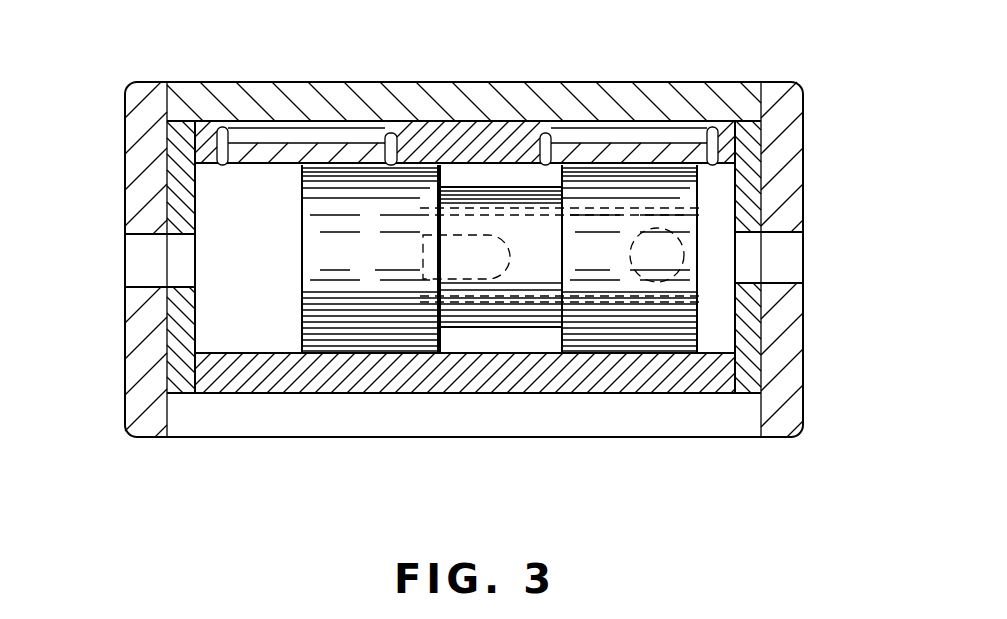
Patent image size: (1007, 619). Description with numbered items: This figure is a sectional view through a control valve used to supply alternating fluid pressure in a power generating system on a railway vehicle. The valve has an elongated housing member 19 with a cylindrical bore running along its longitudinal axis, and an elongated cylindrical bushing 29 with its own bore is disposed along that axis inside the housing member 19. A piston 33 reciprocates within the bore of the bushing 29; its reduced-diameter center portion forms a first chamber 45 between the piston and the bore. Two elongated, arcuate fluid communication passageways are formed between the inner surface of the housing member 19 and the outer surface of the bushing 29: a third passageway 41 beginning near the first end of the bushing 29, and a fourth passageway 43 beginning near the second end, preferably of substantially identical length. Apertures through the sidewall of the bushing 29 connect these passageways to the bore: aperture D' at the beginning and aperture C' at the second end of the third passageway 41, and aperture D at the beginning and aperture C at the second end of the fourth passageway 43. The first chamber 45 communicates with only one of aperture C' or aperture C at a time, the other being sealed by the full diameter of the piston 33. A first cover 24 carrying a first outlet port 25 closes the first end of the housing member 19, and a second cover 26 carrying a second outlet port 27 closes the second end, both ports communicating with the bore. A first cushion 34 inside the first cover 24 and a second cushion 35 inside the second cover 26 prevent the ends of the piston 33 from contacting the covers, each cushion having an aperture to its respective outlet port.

The housing member 19 is at (190, 92).
The first cover 24 is at (793, 165).
The first outlet port 25 is at (785, 260).
The second cover 26 is at (135, 167).
The second outlet port 27 is at (135, 261).
The bushing 29 is at (482, 130).
The piston 33 is at (360, 338).
The first cushion 34 is at (745, 375).
The second cushion 35 is at (183, 375).
The third fluid communication passageway 41 is at (636, 125).
The fourth fluid communication passageway 43 is at (330, 130).
The first chamber 45 is at (492, 338).
The sixth aperture C is at (400, 95).
The fourth aperture C' is at (557, 95).
The seventh aperture D is at (245, 95).
The fifth aperture D' is at (714, 95).